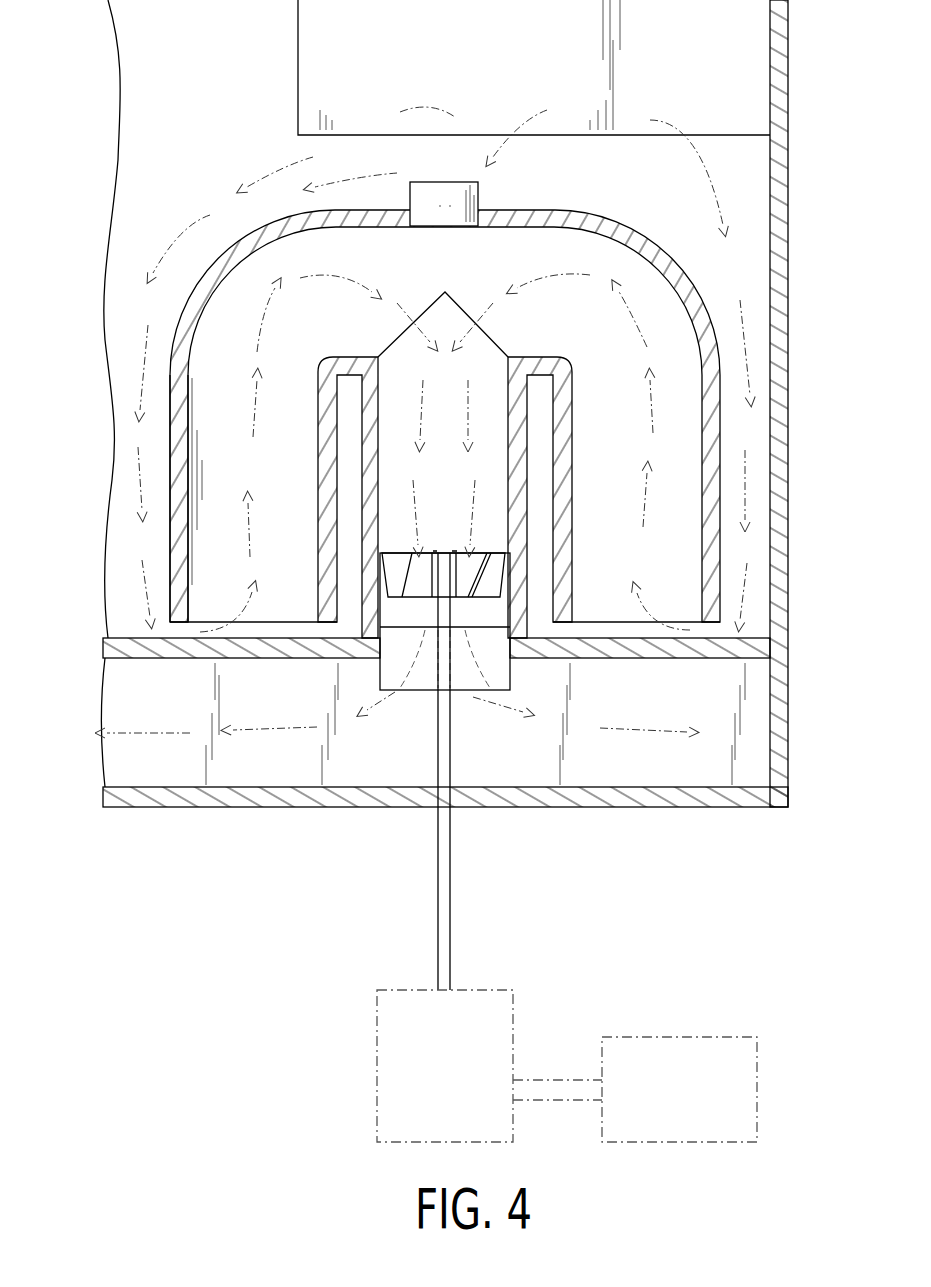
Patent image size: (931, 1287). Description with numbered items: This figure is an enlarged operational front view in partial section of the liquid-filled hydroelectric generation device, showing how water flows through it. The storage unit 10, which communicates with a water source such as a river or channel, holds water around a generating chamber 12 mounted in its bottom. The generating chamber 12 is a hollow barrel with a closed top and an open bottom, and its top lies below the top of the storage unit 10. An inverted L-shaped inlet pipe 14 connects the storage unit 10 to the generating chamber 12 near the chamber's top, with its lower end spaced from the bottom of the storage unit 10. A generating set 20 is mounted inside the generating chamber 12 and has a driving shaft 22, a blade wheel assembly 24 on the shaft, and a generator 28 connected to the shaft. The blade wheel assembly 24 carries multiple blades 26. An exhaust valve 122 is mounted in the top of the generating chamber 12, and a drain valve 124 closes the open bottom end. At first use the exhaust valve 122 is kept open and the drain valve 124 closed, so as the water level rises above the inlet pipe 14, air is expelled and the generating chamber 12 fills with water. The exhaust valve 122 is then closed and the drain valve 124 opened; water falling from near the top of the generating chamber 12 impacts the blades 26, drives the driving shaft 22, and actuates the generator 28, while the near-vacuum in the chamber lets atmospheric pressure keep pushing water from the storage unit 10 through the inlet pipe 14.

The storage unit 10 is at (230, 210).
The generating chamber 12 is at (503, 220).
The exhaust valve 122 is at (458, 218).
The drain valve 124 is at (427, 680).
The inlet pipe 14 is at (182, 547).
The generating set 20 is at (447, 515).
The driving shaft 22 is at (445, 896).
The blade wheel assembly 24 is at (398, 542).
The blade 26 is at (492, 574).
The generator 28 is at (725, 1088).